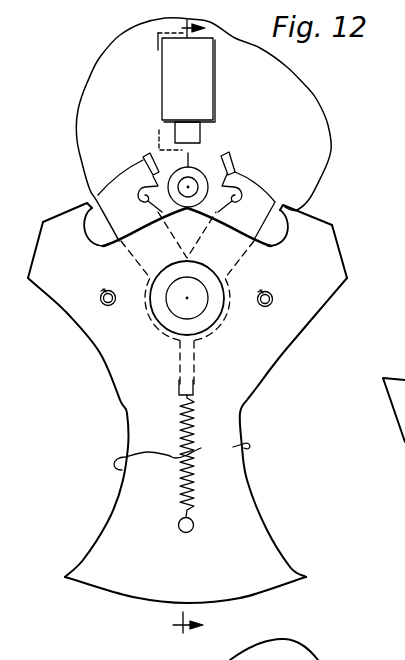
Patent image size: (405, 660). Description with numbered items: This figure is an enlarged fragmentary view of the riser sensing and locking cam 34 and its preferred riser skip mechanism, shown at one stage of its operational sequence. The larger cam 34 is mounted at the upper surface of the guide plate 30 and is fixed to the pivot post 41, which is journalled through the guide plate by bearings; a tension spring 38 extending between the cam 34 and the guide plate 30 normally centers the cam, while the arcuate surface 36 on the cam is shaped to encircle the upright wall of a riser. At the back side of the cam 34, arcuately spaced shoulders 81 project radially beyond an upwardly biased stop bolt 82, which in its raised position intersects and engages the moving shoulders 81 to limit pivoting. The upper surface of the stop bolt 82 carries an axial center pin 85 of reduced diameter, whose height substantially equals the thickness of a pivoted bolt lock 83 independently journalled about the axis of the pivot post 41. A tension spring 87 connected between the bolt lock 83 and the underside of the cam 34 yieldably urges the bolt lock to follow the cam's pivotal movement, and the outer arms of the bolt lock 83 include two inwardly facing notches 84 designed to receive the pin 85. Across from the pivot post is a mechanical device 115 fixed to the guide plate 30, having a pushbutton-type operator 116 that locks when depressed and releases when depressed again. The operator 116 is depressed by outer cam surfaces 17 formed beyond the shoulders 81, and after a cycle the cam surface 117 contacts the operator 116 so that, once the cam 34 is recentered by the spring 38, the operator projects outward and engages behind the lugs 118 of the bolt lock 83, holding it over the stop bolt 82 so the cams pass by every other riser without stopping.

The outer cam surfaces 17 is at (181, 329).
The guide plate 30 is at (322, 148).
The riser sensing and locking cam 34 is at (247, 483).
The arcuate surface 36 is at (182, 455).
The tension spring 38 is at (294, 281).
The pivot post 41 is at (206, 303).
The shoulders 81 is at (277, 240).
The stop bolt 82 is at (206, 179).
The bolt lock 83 is at (255, 198).
The notches 84 is at (238, 206).
The axial center pin 85 is at (188, 190).
The tension spring 87 is at (189, 424).
The mechanical device 115 is at (205, 90).
The operator 116 is at (200, 134).
The cam surface 117 is at (315, 221).
The lugs 118 is at (233, 157).